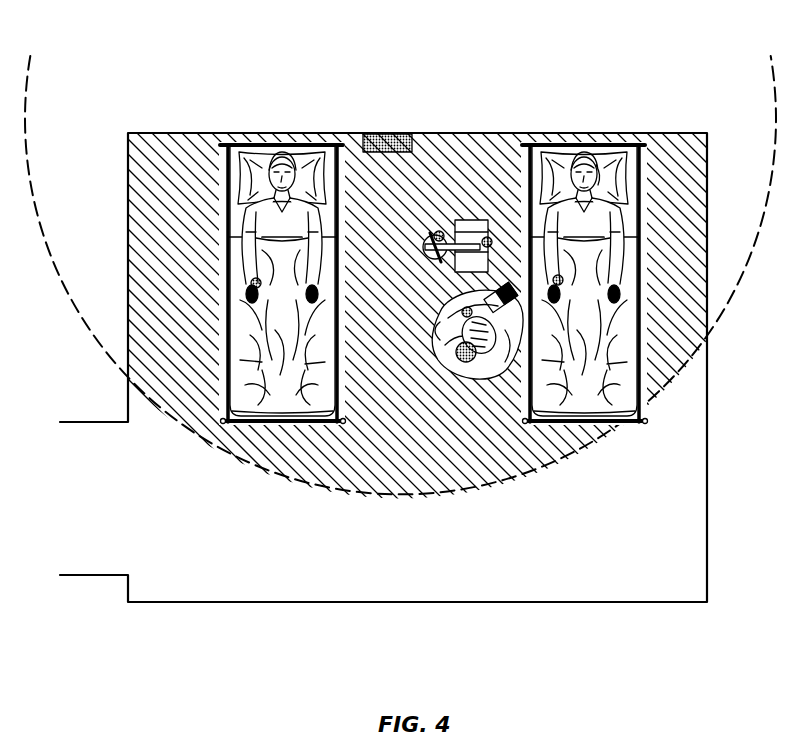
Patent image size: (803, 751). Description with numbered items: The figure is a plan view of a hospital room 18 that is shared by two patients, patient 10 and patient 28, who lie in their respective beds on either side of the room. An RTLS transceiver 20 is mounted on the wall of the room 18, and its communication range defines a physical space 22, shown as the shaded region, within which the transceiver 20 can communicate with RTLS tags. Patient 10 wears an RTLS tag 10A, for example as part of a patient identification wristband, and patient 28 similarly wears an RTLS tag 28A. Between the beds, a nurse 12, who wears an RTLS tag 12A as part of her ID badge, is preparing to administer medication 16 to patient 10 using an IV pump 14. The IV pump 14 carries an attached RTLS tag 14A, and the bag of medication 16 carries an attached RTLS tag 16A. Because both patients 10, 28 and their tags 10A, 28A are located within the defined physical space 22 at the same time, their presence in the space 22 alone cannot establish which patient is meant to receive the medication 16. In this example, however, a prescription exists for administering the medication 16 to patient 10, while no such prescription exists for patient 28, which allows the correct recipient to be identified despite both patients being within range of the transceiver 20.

The patient 10 is at (640, 234).
The RTLS tag 10A is at (563, 280).
The nurse 12 is at (502, 375).
The RTLS tag 12A is at (445, 318).
The IV pump 14 is at (470, 263).
The RTLS tag 14A is at (486, 236).
The medication 16 is at (424, 246).
The RTLS tag 16A is at (434, 231).
The hospital room 18 is at (392, 578).
The RTLS transceiver 20 is at (379, 133).
The defined physical space 22 is at (318, 456).
The patient 28 is at (228, 200).
The RTLS tag 28A is at (250, 285).